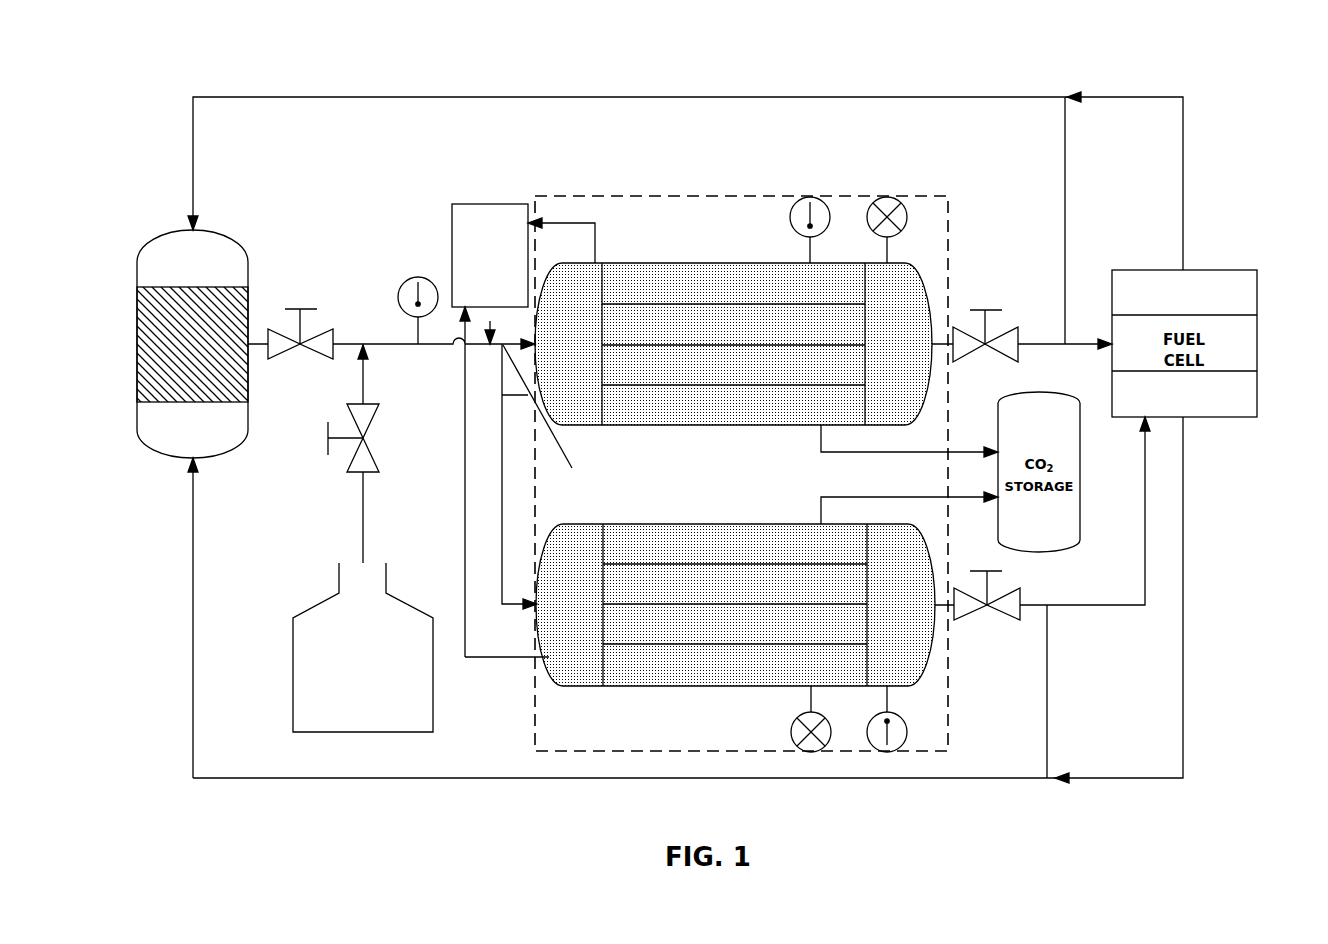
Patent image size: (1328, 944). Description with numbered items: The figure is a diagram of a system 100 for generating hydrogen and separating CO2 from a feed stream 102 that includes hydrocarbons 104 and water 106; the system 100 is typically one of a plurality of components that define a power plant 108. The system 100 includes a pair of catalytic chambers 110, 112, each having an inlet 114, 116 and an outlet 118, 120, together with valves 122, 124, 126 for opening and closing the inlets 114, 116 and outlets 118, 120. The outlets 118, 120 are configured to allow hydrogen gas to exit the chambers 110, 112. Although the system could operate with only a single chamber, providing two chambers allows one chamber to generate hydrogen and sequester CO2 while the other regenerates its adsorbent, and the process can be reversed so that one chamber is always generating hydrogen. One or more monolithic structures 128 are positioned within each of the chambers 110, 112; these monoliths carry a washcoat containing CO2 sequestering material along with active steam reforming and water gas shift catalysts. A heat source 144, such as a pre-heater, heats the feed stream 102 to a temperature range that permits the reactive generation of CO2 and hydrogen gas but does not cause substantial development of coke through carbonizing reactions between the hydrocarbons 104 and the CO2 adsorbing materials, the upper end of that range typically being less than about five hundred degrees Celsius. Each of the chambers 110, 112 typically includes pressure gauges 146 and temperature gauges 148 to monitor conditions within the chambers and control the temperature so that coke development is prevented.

The system 100 is at (887, 752).
The feed stream 102 is at (554, 422).
The hydrocarbons 104 is at (249, 330).
The water 106 is at (363, 510).
The power plant 108 is at (1230, 90).
The catalytic chamber 110 is at (657, 263).
The catalytic chamber 112 is at (634, 666).
The inlet 114 is at (537, 344).
The inlet 116 is at (538, 604).
The outlet 118 is at (934, 334).
The outlet 120 is at (953, 615).
The valve 122 is at (268, 333).
The valve 124 is at (1014, 362).
The valve 126 is at (1022, 591).
The monolithic structure 128 is at (733, 462).
The heat source 144 is at (468, 203).
The pressure gauge 146 is at (887, 197).
The temperature gauge 148 is at (810, 197).